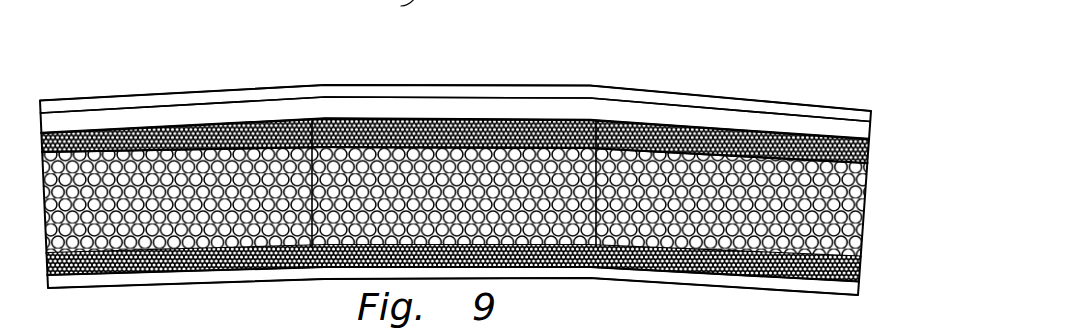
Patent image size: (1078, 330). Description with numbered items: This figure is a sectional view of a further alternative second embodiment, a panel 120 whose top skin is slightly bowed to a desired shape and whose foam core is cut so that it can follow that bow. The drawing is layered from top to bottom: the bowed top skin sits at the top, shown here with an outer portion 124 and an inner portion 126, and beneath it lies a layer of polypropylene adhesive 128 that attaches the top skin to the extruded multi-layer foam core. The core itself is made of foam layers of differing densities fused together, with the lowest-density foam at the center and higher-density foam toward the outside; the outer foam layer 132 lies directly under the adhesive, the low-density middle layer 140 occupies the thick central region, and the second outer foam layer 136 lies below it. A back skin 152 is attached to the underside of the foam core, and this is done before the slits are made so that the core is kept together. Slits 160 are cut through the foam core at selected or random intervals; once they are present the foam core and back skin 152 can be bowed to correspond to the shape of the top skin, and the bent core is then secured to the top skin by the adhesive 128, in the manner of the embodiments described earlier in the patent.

The laminated panel 120 is at (634, 69).
The outer cover layer 124 is at (770, 110).
The intermediate layer 126 is at (827, 127).
The polypropylene adhesive 128 is at (870, 142).
The outer foam layer 132 is at (683, 128).
The outer foam layer 136 is at (858, 277).
The middle layer 140 is at (862, 213).
The back skin 152 is at (743, 282).
The slits 160 is at (312, 121).